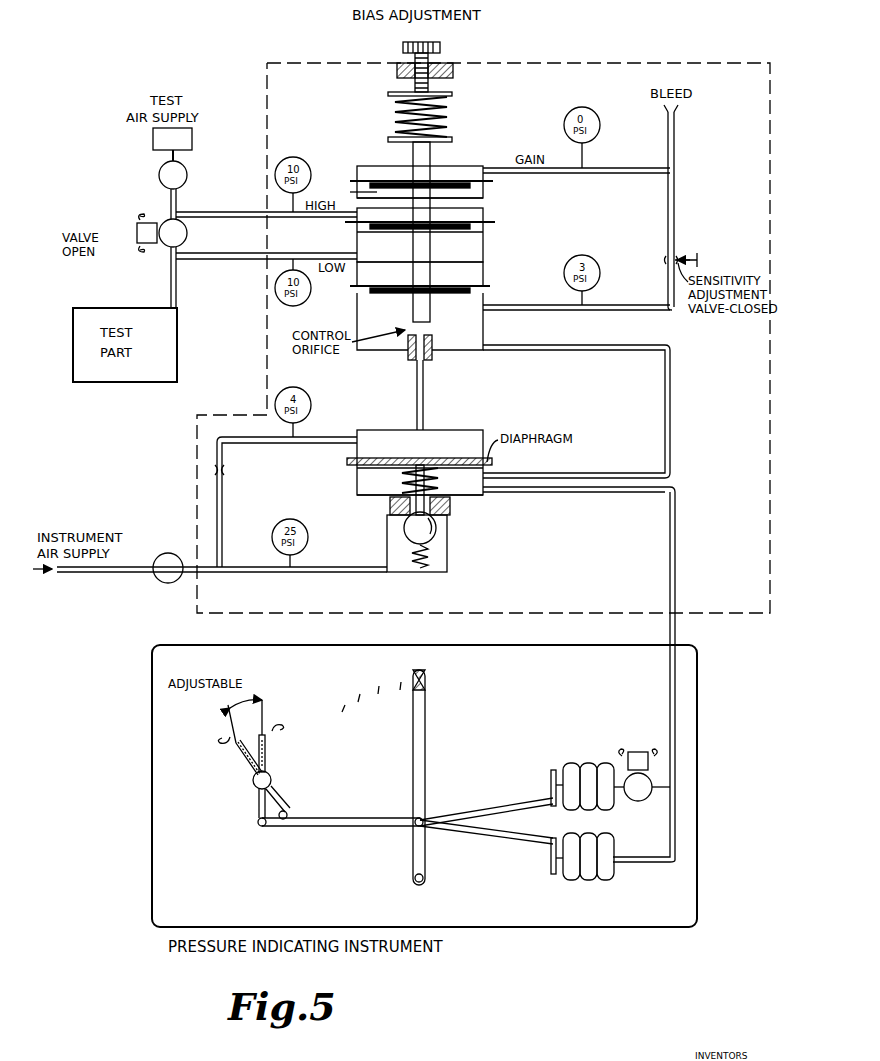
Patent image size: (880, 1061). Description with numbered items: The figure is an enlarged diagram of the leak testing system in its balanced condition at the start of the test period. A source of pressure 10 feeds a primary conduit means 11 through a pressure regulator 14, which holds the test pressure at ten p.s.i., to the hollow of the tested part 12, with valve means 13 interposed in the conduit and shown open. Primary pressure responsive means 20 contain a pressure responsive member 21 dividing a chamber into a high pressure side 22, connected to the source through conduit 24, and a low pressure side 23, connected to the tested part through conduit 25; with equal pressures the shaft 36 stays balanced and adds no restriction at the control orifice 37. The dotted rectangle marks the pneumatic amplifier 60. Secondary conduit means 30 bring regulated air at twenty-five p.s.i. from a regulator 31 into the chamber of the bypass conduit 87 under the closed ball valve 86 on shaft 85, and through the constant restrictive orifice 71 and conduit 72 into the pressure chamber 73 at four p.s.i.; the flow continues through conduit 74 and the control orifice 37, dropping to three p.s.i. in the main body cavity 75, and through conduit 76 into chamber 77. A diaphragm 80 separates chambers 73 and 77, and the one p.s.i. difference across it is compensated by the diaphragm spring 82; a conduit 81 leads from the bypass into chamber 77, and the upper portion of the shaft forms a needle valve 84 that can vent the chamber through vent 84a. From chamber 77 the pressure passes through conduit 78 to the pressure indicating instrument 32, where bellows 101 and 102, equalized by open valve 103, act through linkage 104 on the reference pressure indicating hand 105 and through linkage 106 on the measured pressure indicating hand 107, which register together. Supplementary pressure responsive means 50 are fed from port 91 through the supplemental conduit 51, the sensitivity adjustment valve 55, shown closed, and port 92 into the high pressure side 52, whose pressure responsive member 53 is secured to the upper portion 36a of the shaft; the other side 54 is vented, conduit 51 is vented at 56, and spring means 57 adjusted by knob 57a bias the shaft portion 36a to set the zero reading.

The source of pressure 10 is at (153, 135).
The primary conduit means 11 is at (171, 197).
The tested part 12 is at (99, 382).
The valve means 13 is at (187, 234).
The pressure regulator 14 is at (159, 170).
The primary pressure responsive means 20 is at (489, 247).
The pressure responsive member 21 is at (395, 226).
The high pressure side 22 is at (493, 208).
The low pressure side 23 is at (470, 262).
The conduit 24 is at (243, 212).
The conduit 25 is at (238, 260).
The secondary conduit means 30 is at (676, 523).
The regulator 31 is at (160, 580).
The pressure indicating instrument 32 is at (700, 870).
The shaft 36 is at (413, 284).
The upper portion of shaft 36a is at (413, 158).
The control orifice 37 is at (428, 337).
The supplementary pressure responsive means 50 is at (502, 179).
The supplemental conduit 51 is at (675, 144).
The high pressure side 52 is at (448, 178).
The pressure responsive member 53 is at (462, 178).
The other side 54 is at (377, 192).
The sensitivity adjustment valve 55 is at (690, 258).
The vent 56 is at (677, 112).
The spring means 57 is at (400, 108).
The adjustment knob 57a is at (440, 47).
The pneumatic amplifier 60 is at (772, 490).
The constant restrictive orifice 71 is at (213, 470).
The conduit 72 is at (318, 440).
The pressure chamber 73 is at (470, 432).
The conduit 74 is at (416, 400).
The main body cavity 75 is at (420, 321).
The conduit 76 is at (676, 377).
The chamber 77 is at (478, 495).
The conduit 78 is at (588, 492).
The diaphragm 80 is at (484, 446).
The conduit 81 is at (447, 506).
The diaphragm spring 82 is at (395, 484).
The needle valve 84 is at (442, 452).
The vent 84a is at (365, 467).
The shaft 85 is at (404, 527).
The ball valve 86 is at (437, 540).
The bypass conduit 87 is at (400, 560).
The port 91 is at (485, 318).
The port 92 is at (478, 166).
The bellows 101 is at (595, 738).
The bellows 102 is at (590, 880).
The valve 103 is at (637, 752).
The linkage 104 is at (505, 800).
The reference pressure indicating hand 105 is at (426, 672).
The linkage 106 is at (500, 838).
The measured pressure indicating hand 107 is at (425, 787).